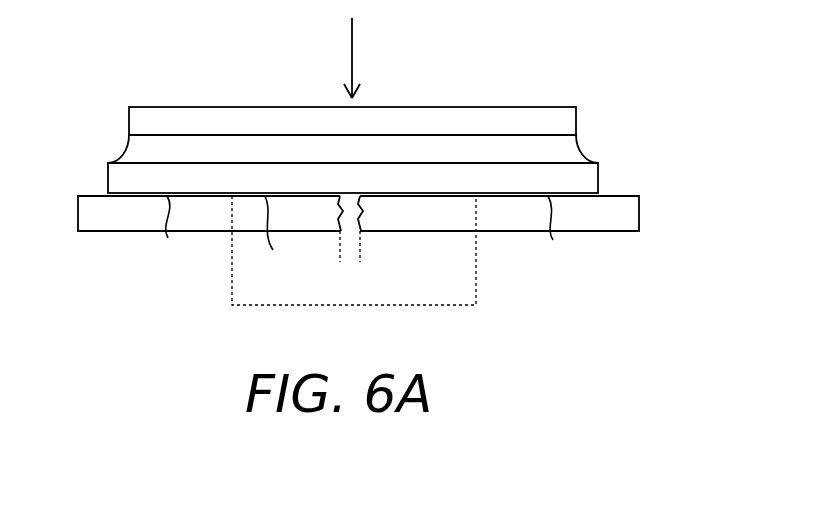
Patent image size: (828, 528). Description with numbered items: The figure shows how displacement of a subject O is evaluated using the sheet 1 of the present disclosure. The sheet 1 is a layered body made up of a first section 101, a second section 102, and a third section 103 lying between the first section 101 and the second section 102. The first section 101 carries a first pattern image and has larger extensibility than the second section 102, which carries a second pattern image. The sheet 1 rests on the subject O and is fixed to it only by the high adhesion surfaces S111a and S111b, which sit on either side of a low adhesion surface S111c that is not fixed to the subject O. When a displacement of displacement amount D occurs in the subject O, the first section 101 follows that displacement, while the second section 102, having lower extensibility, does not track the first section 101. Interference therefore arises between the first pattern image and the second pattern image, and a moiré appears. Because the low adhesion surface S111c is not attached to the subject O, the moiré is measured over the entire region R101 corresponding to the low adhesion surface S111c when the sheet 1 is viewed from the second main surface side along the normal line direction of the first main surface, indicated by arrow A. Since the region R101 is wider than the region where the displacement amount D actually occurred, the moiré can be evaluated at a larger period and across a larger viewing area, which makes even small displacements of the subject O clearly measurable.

The sheet 1 is at (389, 116).
The arrow indicating normal line direction A is at (352, 60).
The second section 102 is at (610, 105).
The third section 103 is at (610, 135).
The first section 101 is at (610, 163).
The subject O is at (117, 212).
The high adhesion surface S111a is at (171, 232).
The high adhesion surface S111b is at (560, 232).
The low adhesion surface S111c is at (271, 239).
The displacement amount D is at (388, 257).
The region corresponding to the low adhesion surface R101 is at (353, 305).